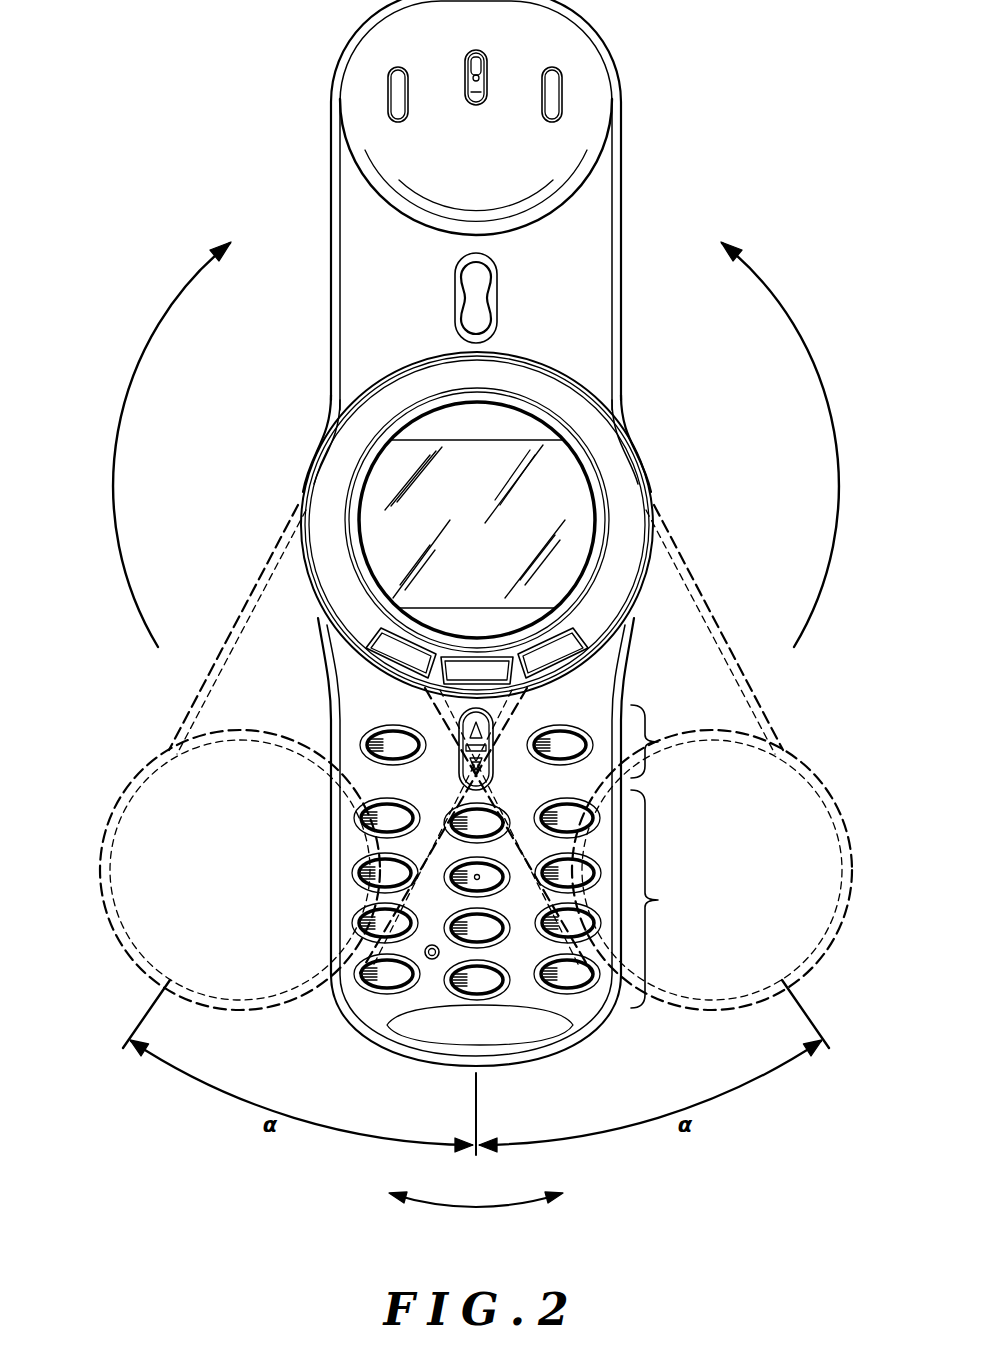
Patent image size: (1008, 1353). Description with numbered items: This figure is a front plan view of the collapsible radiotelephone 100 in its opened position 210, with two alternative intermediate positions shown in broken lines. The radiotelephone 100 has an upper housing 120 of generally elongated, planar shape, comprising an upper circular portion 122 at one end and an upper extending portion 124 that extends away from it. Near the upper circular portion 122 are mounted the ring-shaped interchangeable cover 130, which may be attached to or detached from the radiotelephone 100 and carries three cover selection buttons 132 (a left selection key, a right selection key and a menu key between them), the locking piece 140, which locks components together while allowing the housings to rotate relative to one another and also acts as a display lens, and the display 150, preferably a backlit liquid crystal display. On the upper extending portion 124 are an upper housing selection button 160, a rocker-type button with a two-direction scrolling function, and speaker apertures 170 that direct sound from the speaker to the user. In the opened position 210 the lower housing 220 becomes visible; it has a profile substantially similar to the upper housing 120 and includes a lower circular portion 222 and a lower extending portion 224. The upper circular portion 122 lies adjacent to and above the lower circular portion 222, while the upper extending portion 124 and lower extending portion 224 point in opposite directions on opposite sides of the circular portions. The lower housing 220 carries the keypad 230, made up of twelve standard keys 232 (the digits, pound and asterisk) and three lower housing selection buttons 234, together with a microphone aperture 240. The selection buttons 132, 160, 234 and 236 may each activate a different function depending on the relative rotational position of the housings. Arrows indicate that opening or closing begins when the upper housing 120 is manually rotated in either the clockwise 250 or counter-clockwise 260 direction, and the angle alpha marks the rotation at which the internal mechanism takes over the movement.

The radiotelephone 100 is at (177, 42).
The upper housing 120 is at (623, 168).
The upper circular portion 122 is at (661, 514).
The upper extending portion 124 is at (623, 126).
The interchangeable cover 130 is at (619, 470).
The cover selection buttons 132 is at (480, 673).
The locking piece 140 is at (463, 425).
The display 150 is at (430, 511).
The upper housing selection button 160 is at (478, 297).
The speaker apertures 170 is at (400, 80).
The opened position 210 is at (660, 90).
The lower housing 220 is at (333, 859).
The lower circular portion 222 is at (298, 503).
The lower extending portion 224 is at (333, 896).
The keypad 230 is at (355, 770).
The standard keys 232 is at (667, 899).
The lower housing selection buttons 234 is at (667, 741).
The selection button 236 is at (489, 768).
The microphone aperture 240 is at (432, 962).
The clockwise direction 250 is at (177, 296).
The counter-clockwise direction 260 is at (775, 296).